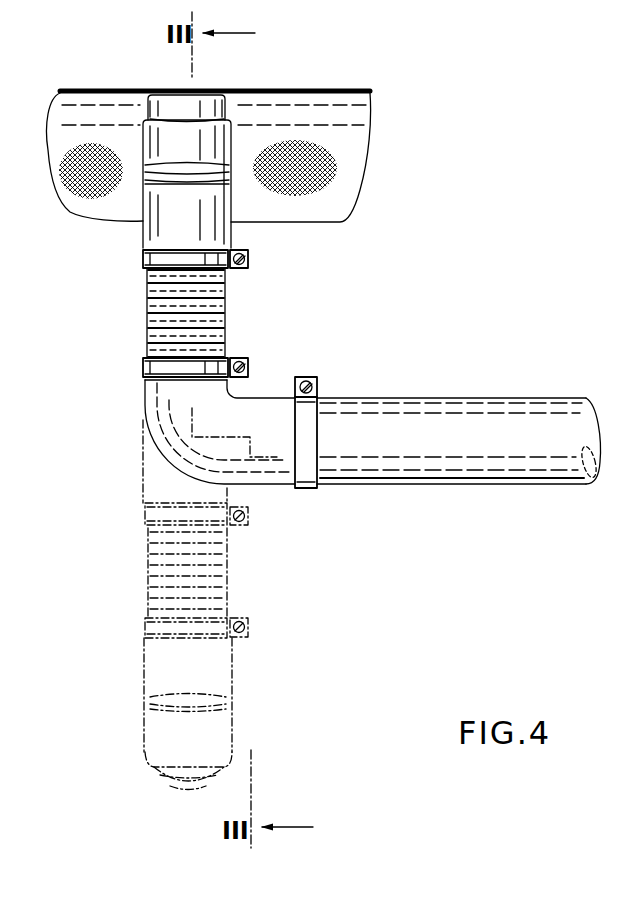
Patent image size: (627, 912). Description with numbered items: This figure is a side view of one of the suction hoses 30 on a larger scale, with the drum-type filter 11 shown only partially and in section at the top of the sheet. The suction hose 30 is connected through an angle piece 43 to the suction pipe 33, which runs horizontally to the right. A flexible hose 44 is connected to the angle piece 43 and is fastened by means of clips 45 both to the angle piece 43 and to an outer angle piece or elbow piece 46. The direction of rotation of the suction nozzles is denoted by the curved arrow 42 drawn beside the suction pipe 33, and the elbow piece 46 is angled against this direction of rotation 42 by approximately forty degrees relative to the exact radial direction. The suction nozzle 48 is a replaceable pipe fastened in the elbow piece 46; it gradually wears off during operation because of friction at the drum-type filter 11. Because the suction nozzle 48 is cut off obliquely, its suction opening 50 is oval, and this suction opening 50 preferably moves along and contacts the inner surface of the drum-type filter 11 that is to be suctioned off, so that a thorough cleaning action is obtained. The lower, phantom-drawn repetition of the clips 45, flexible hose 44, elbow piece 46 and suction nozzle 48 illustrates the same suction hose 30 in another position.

The drum-type filter 11 is at (323, 91).
The suction hose 30 is at (138, 317).
The suction pipe 33 is at (512, 425).
The direction of rotation 42 is at (438, 524).
The angle piece 43 is at (170, 417).
The flexible hose 44 is at (227, 320).
The clip 45 is at (142, 260).
The elbow piece 46 is at (150, 181).
The suction nozzle 48 is at (165, 100).
The suction opening 50 is at (180, 787).